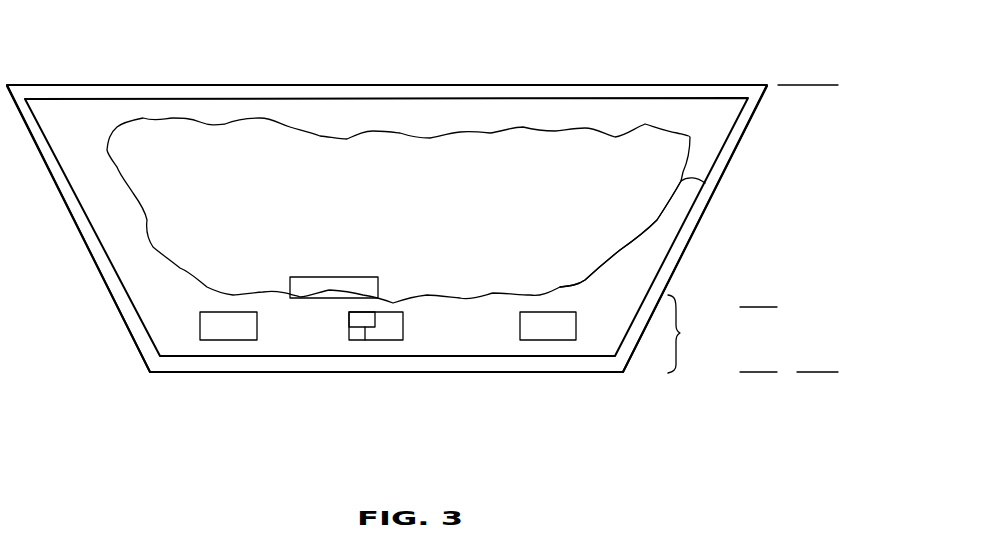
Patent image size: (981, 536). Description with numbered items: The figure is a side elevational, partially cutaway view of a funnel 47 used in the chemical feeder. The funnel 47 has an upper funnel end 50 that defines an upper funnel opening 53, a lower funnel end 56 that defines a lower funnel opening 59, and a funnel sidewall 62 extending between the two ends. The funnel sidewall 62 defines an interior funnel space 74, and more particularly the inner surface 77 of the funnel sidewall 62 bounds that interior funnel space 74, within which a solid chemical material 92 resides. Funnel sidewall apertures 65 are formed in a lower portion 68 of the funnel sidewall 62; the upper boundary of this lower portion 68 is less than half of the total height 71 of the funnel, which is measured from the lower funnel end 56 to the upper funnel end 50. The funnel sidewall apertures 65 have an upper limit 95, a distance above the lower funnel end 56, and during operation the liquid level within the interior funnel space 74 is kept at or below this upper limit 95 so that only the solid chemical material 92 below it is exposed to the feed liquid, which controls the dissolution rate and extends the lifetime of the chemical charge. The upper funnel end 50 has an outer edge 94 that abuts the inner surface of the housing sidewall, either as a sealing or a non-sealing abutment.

The funnel 47 is at (143, 398).
The upper funnel end 50 is at (535, 83).
The upper funnel opening 53 is at (393, 83).
The lower funnel end 56 is at (500, 372).
The lower funnel opening 59 is at (348, 398).
The funnel sidewall 62 is at (88, 247).
The funnel sidewall aperture 65 is at (212, 322).
The lower portion 68 is at (690, 334).
The total height 71 is at (810, 84).
The interior funnel space 74 is at (588, 185).
The inner surface 77 is at (680, 181).
The solid chemical material 92 is at (350, 323).
The outer edge 94 is at (4, 82).
The upper limit 95 is at (758, 307).